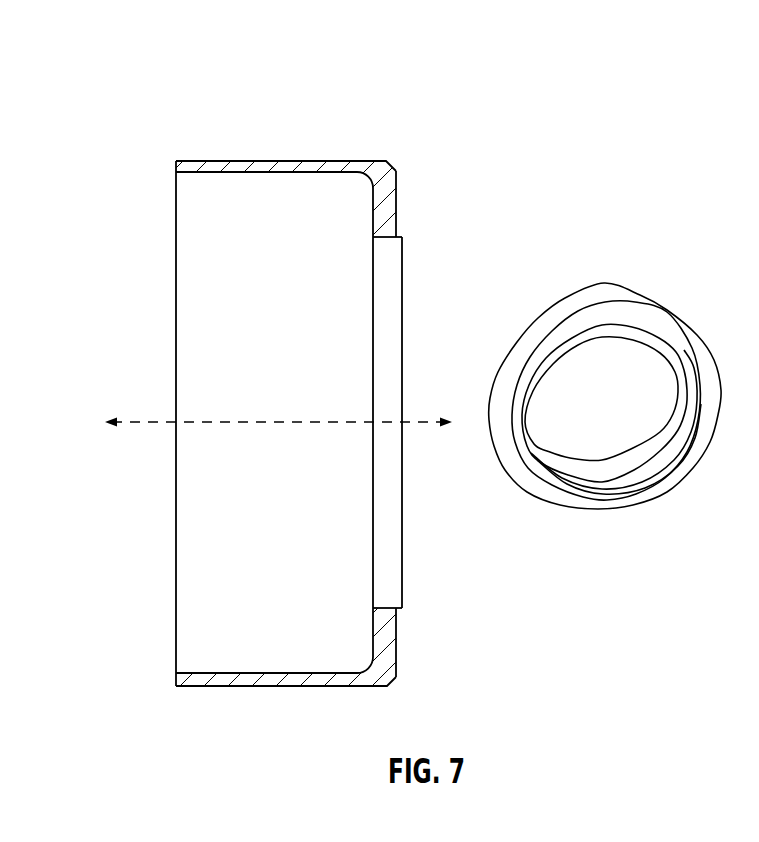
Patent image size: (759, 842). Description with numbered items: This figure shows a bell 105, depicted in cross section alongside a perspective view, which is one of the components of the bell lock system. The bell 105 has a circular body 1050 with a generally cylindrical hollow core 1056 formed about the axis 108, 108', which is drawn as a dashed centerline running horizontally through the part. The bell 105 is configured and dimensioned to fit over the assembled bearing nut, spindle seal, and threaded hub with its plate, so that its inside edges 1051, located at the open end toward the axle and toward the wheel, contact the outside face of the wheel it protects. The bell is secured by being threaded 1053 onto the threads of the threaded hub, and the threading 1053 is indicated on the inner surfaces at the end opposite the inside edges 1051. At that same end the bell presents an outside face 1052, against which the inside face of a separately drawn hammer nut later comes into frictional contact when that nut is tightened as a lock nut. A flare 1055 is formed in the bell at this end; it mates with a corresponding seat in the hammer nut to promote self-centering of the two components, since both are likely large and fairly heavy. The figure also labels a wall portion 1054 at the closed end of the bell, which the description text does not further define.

The bell 105 is at (191, 71).
The circular body 1050 is at (208, 166).
The inside edges 1051 is at (177, 166).
The outside face 1052 is at (398, 196).
The threads 1053 is at (384, 239).
The end wall 1054 is at (408, 507).
The flare 1055 is at (400, 236).
The hollow core 1056 is at (205, 291).
The axis 108 is at (265, 408).
The axis 108' is at (447, 405).